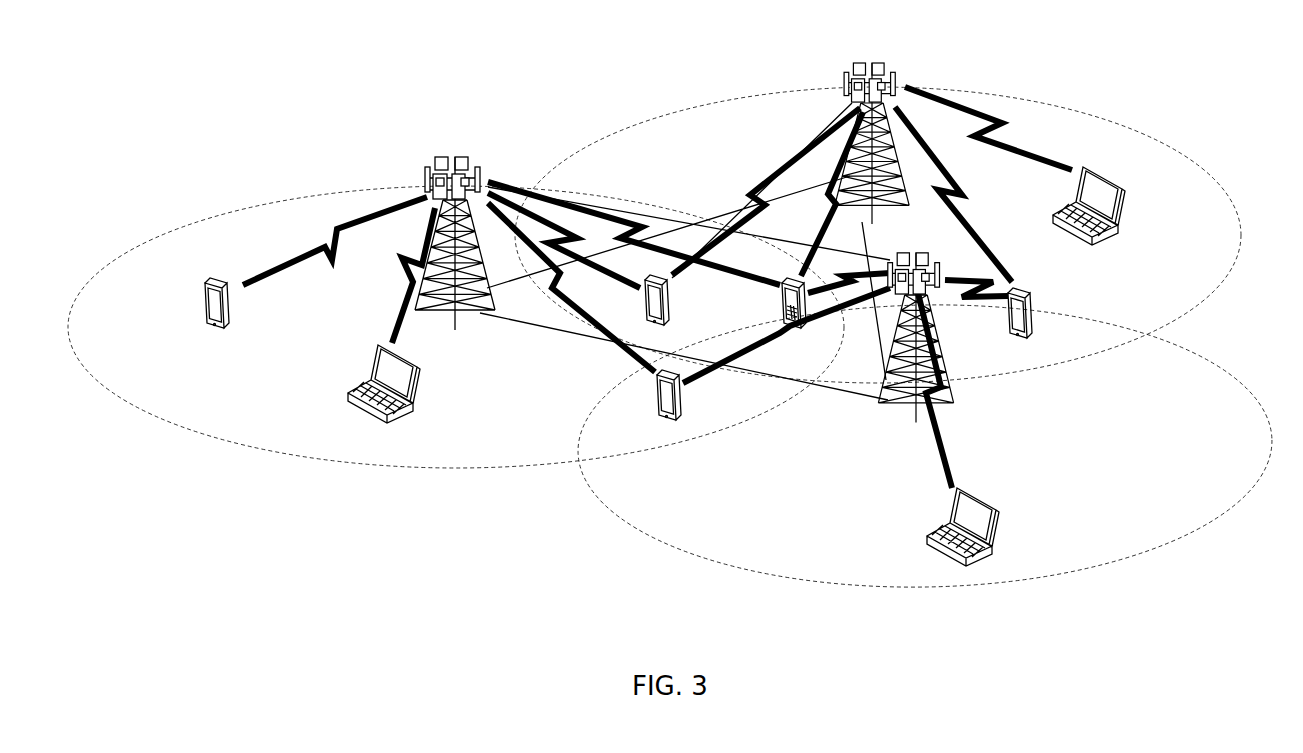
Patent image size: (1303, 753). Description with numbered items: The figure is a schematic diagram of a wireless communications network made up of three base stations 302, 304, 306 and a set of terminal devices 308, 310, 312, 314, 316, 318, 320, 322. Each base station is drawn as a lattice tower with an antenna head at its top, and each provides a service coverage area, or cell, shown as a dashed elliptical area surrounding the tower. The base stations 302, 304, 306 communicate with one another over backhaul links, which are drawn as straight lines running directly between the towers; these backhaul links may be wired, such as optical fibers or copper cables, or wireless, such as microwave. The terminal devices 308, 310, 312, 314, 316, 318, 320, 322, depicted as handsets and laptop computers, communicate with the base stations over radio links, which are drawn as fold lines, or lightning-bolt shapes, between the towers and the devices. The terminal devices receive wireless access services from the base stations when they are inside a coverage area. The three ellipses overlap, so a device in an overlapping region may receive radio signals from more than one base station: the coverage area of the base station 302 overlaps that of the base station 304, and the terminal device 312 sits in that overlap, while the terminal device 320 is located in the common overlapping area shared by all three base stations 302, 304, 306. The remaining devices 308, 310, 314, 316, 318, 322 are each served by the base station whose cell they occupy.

The base station 302 is at (446, 158).
The base station 304 is at (910, 251).
The base station 306 is at (885, 60).
The terminal device 308 is at (232, 306).
The terminal device 310 is at (420, 368).
The terminal device 312 is at (655, 385).
The terminal device 314 is at (999, 510).
The terminal device 316 is at (1035, 303).
The terminal device 318 is at (1127, 190).
The terminal device 320 is at (782, 305).
The terminal device 322 is at (670, 296).